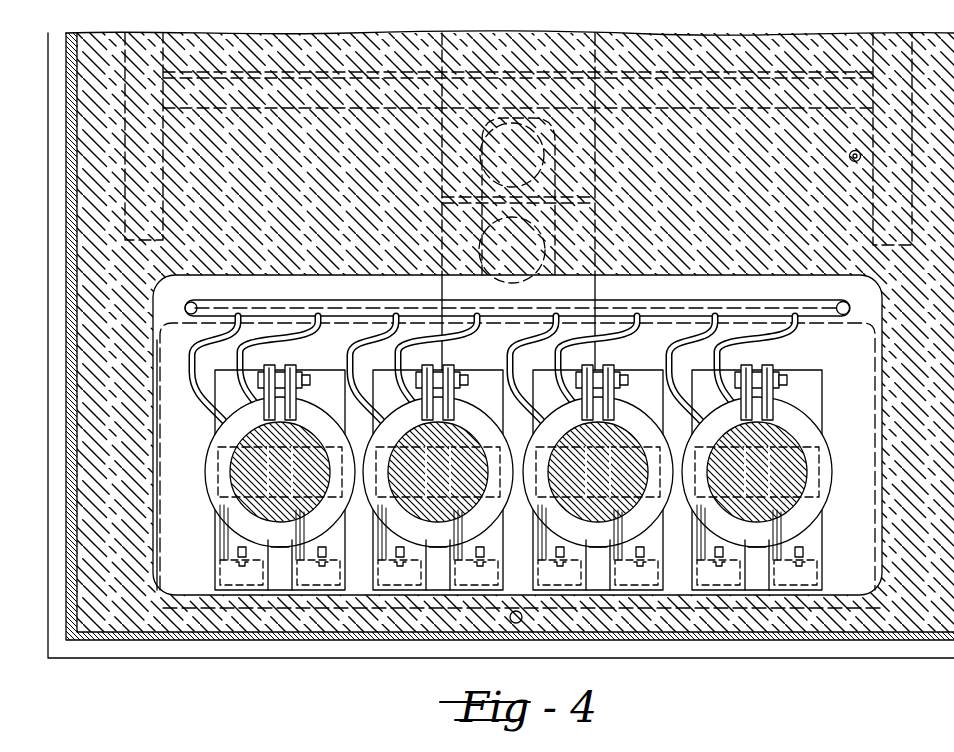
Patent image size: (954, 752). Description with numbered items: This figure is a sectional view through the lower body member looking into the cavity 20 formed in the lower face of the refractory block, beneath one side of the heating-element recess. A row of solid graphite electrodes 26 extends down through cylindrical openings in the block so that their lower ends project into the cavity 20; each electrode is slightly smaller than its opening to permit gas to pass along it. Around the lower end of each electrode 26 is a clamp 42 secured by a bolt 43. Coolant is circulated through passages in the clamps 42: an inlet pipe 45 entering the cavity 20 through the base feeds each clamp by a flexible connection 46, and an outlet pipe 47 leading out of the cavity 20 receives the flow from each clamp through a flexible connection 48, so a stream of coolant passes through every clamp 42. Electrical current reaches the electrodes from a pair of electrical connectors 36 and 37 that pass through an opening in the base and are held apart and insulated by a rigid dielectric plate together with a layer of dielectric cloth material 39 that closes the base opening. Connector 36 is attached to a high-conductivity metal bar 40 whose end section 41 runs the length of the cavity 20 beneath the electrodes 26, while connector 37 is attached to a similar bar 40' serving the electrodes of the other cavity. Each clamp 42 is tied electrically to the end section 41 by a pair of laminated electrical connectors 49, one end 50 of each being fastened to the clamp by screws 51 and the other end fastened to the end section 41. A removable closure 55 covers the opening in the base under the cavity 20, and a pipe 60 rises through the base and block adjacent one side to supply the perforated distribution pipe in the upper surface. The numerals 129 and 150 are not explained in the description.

The cavity 20 is at (843, 500).
The electrode 26 is at (462, 437).
The electrical connector 36 is at (546, 242).
The electrical connector 37 is at (542, 148).
The dielectric cloth material layer 39 is at (553, 186).
The bar 40 is at (517, 201).
The bar 40' is at (499, 136).
The end section 41 is at (818, 383).
The clamp 42 is at (207, 464).
The bolt 43 is at (458, 372).
The inlet pipe 45 is at (847, 304).
The flexible connection 46 is at (192, 392).
The outlet pipe 47 is at (190, 303).
The flexible connection 48 is at (240, 350).
The electrical connector 49 is at (330, 550).
The connector end 50 is at (217, 578).
The screw 51 is at (250, 570).
The removable closure 55 is at (867, 330).
The pipe 60 is at (513, 623).
The pin 129 is at (850, 159).
The slot 150 is at (910, 134).